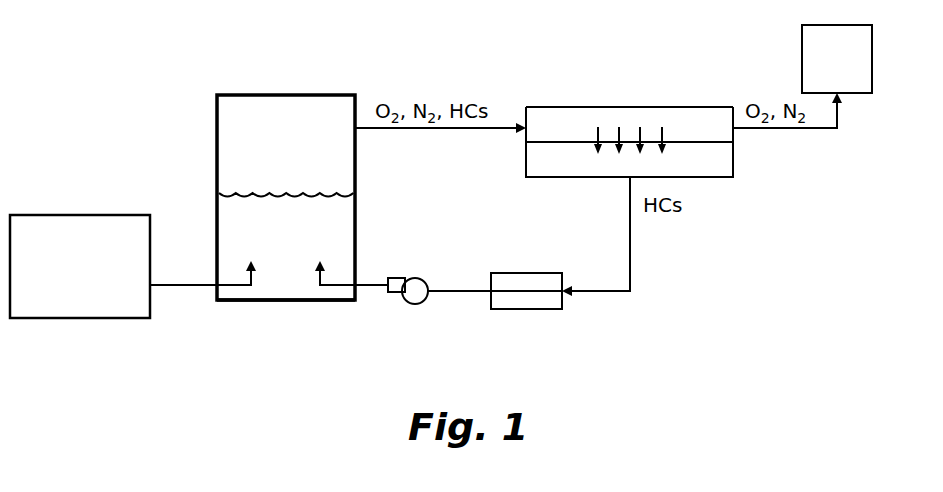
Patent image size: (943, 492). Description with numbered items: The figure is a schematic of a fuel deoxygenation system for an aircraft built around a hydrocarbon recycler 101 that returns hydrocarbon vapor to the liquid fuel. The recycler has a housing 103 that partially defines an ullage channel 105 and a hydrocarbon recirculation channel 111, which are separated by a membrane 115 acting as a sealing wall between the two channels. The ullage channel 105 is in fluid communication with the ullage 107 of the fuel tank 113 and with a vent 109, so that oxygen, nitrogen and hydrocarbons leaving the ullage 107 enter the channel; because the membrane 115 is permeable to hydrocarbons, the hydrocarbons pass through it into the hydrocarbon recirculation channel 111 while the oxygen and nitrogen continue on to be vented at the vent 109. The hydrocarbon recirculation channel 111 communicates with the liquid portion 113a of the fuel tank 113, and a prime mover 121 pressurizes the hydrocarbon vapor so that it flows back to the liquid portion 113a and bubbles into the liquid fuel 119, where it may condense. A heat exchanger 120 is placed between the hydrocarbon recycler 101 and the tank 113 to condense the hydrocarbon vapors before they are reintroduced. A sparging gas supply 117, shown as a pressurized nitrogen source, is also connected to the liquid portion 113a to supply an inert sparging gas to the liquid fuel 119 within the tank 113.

The hydrocarbon recycler 101 is at (662, 120).
The housing 103 is at (655, 107).
The ullage channel 105 is at (705, 115).
The ullage 107 is at (266, 161).
The vent 109 is at (819, 74).
The hydrocarbon recirculation channel 111 is at (726, 150).
The fuel tank 113 is at (281, 195).
The liquid portion 113a is at (269, 310).
The membrane 115 is at (545, 143).
The sparging gas supply 117 is at (32, 215).
The liquid fuel 119 is at (266, 246).
The heat exchanger 120 is at (530, 309).
The prime mover 121 is at (415, 304).